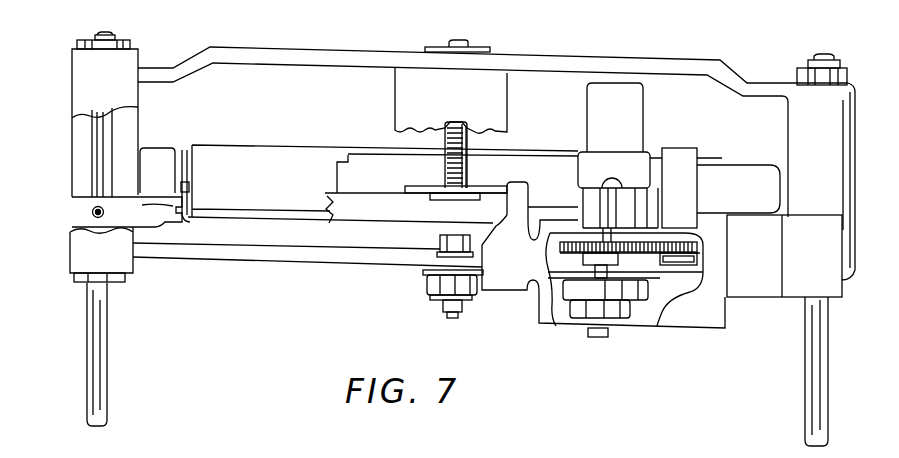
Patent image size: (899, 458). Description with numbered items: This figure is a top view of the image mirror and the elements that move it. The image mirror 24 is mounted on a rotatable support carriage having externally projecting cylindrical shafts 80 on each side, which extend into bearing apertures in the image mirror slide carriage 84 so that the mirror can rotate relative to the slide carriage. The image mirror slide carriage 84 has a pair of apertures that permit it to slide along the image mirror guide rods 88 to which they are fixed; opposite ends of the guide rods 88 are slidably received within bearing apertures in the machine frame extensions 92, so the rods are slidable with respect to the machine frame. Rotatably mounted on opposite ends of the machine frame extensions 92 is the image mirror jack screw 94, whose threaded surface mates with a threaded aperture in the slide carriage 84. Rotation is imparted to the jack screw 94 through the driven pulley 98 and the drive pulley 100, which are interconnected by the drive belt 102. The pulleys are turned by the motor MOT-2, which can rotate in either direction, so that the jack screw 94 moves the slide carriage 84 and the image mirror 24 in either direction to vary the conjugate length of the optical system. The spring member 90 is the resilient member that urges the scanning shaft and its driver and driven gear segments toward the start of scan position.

The motor MOT- 2 is at (630, 123).
The image mirror 24 is at (300, 163).
The cylindrical shafts 80 is at (190, 217).
The image mirror slide carriage 84 is at (160, 152).
The image mirror guide rods 88 is at (95, 155).
The spring member 90 is at (125, 37).
The machine frame extensions 92 is at (310, 52).
The image mirror jack screw 94 is at (450, 162).
The driven pulley 98 is at (435, 303).
The drive pulley 100 is at (637, 305).
The drive belt 102 is at (530, 292).